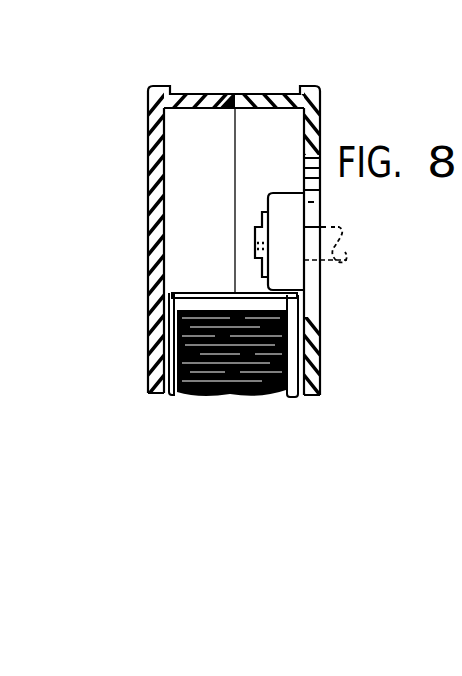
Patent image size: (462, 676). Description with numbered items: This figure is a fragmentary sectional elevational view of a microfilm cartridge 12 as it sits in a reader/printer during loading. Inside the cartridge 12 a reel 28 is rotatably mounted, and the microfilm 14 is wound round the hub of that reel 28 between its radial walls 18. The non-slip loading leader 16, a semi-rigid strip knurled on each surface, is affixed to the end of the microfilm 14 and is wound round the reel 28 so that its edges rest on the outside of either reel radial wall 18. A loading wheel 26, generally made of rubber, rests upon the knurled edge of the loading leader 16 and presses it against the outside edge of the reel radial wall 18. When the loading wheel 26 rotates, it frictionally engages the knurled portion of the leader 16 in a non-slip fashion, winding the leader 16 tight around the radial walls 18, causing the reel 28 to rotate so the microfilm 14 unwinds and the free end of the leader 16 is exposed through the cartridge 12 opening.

The microfilm cartridge 12 is at (229, 93).
The microfilm 14 is at (222, 396).
The non-slip loading leader 16 is at (192, 292).
The reel radial walls 18 is at (168, 367).
The loading wheel 26 is at (268, 192).
The reel 28 is at (168, 328).